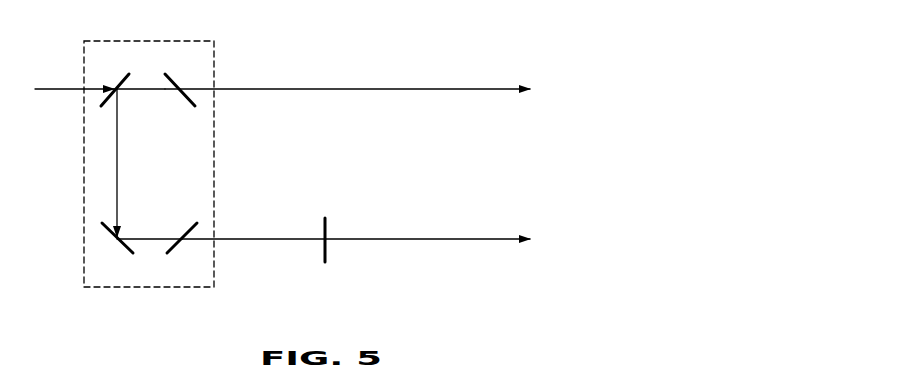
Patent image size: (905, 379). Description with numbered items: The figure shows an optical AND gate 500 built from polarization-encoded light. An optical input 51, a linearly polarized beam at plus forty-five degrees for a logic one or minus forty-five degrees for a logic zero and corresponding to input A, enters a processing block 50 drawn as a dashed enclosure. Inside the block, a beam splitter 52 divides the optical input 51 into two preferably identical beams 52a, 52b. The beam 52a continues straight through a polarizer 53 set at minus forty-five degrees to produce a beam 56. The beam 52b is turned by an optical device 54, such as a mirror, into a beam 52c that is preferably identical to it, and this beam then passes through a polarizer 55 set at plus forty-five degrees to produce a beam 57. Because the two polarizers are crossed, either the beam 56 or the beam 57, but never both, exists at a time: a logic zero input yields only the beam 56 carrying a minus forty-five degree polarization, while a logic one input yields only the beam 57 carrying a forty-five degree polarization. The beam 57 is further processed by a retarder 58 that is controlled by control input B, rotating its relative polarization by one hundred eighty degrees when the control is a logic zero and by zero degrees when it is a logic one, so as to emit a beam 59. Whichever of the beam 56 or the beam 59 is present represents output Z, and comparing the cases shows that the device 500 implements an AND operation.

The processing block 50 is at (100, 37).
The optical input 51 is at (72, 88).
The beam splitter 52 is at (116, 80).
The polarizer 53 is at (182, 80).
The optical device 54 is at (119, 247).
The polarizer 55 is at (180, 247).
The beam 56 is at (248, 91).
The beam 57 is at (252, 237).
The retarder 58 is at (330, 225).
The beam 59 is at (426, 237).
The beam 52a is at (132, 90).
The beam 52b is at (118, 133).
The beam 52c is at (133, 237).
The AND gate 500 is at (528, 33).